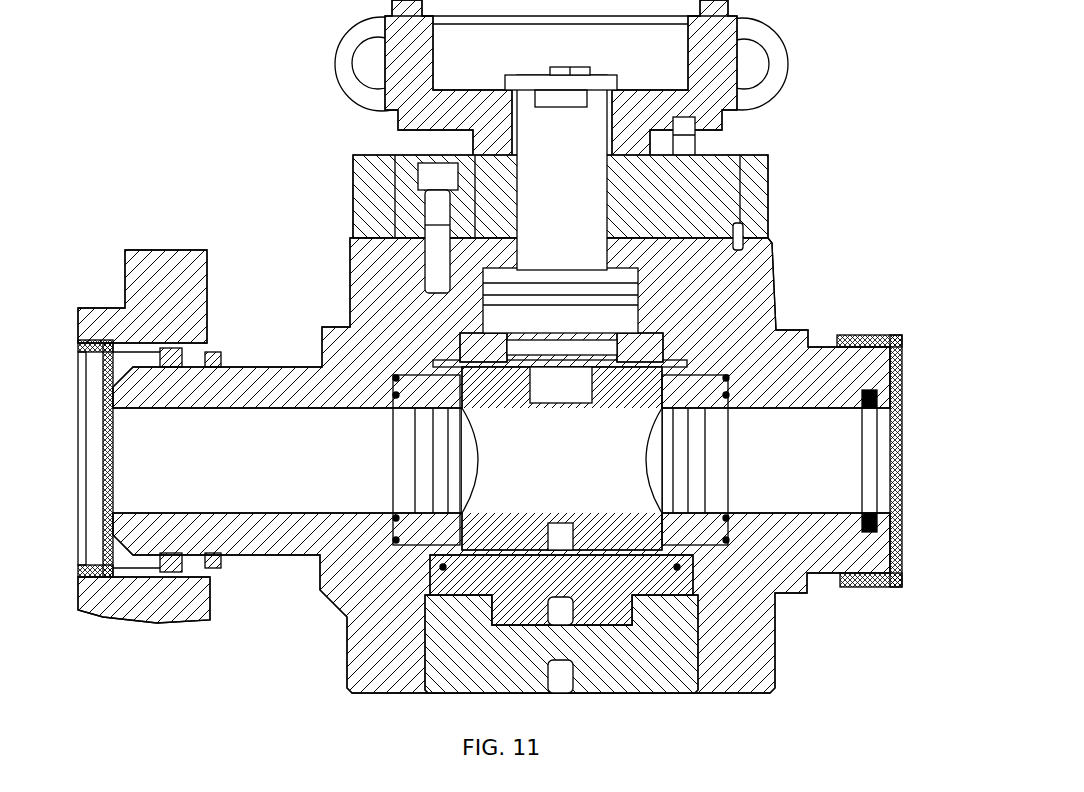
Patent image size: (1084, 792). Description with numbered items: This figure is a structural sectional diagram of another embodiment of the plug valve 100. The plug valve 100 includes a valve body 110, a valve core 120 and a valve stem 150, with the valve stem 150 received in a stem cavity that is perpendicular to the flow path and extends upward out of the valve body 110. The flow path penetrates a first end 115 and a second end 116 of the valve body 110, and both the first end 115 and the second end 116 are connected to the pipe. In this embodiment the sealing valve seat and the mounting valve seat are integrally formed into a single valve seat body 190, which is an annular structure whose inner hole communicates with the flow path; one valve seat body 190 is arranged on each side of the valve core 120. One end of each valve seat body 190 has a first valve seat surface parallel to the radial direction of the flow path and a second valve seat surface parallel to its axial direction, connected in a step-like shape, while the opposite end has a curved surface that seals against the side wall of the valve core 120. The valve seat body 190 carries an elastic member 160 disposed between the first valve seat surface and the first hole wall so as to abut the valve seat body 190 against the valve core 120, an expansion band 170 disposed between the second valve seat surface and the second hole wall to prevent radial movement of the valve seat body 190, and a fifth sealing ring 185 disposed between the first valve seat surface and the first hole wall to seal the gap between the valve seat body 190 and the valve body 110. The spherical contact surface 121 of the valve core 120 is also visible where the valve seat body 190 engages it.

The plug valve 100 is at (876, 172).
The valve body 110 is at (350, 287).
The first end 115 is at (118, 523).
The second end 116 is at (880, 363).
The valve core 120 is at (630, 397).
The ball spherical surface 121 is at (478, 458).
The valve stem 150 is at (582, 193).
The elastic member 160 is at (395, 383).
The expansion band 170 is at (410, 377).
The fifth sealing ring 185 is at (395, 395).
The valve seat body 190 is at (395, 515).